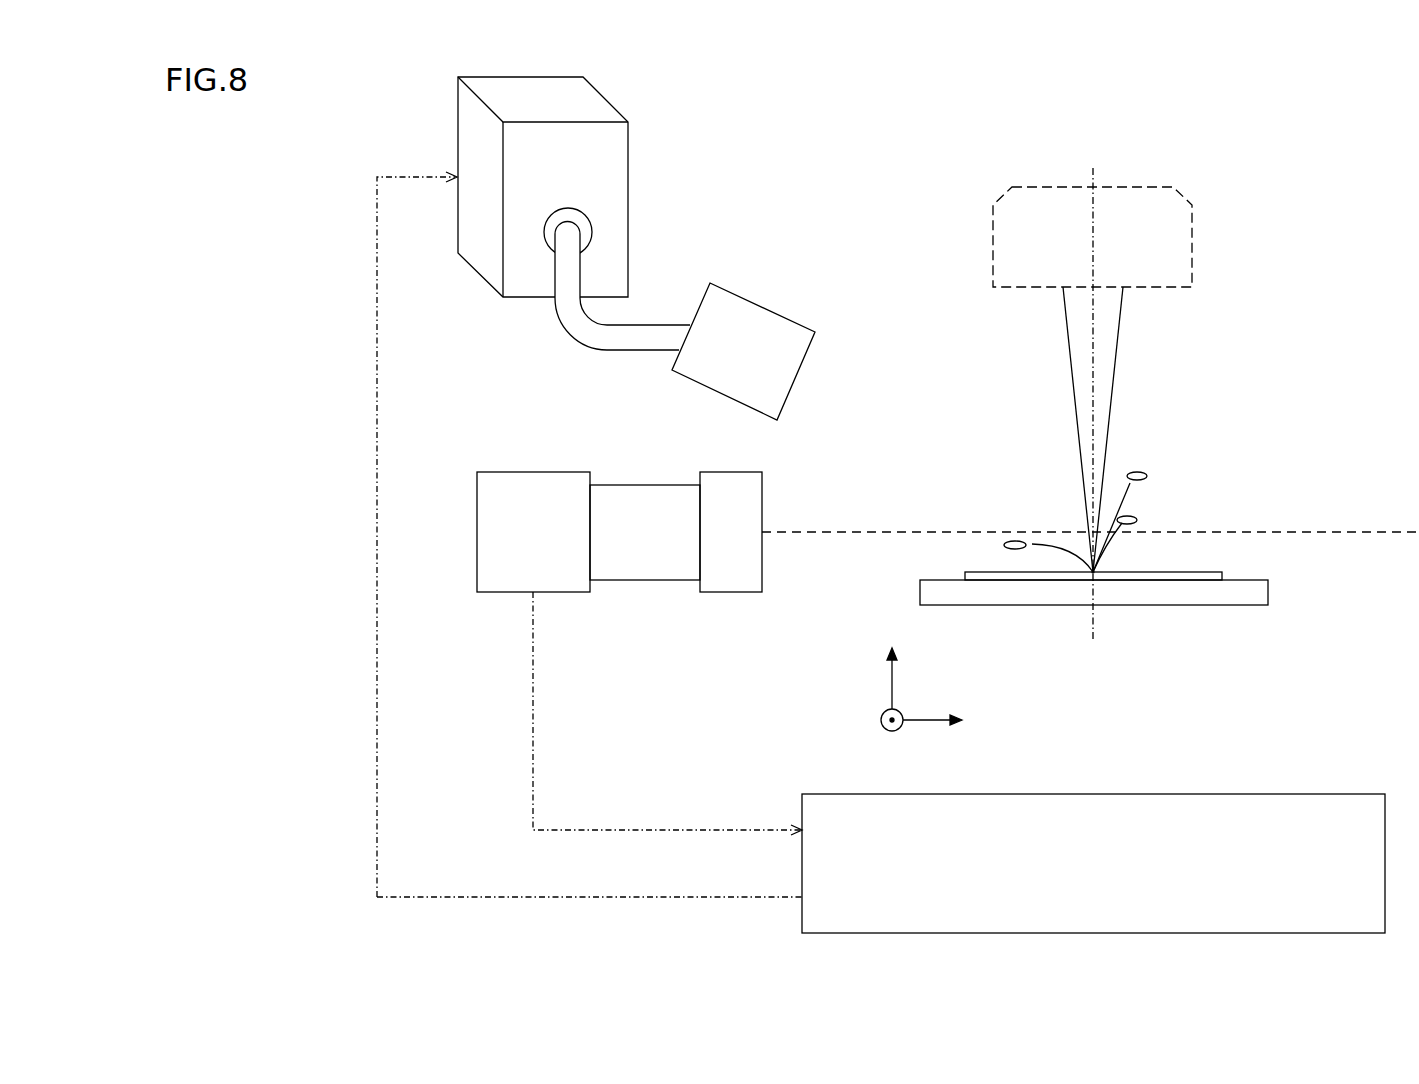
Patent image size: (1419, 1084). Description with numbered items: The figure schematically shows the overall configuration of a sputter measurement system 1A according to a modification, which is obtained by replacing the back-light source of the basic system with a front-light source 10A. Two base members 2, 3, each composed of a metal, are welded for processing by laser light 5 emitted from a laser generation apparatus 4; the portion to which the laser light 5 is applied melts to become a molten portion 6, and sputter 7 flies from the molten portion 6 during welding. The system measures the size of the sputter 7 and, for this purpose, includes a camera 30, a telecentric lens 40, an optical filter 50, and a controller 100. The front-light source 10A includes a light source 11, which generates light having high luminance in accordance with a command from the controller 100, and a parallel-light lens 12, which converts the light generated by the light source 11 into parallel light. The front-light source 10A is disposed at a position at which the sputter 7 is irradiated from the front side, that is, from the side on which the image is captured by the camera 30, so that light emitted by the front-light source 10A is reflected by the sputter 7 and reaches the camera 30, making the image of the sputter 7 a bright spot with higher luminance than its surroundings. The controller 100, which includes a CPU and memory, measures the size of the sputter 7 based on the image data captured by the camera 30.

The sputter measurement system 1A is at (1112, 117).
The base member 2 is at (1203, 572).
The base member 3 is at (1240, 607).
The laser generation apparatus 4 is at (1152, 188).
The laser light 5 is at (1120, 338).
The molten portion 6 is at (1093, 572).
The sputter 7 is at (1015, 540).
The front-light source 10A is at (717, 215).
The light source 11 is at (628, 148).
The parallel-light lens 12 is at (763, 307).
The camera 30 is at (537, 470).
The telecentric lens 40 is at (647, 484).
The optical filter 50 is at (730, 470).
The controller 100 is at (1312, 794).